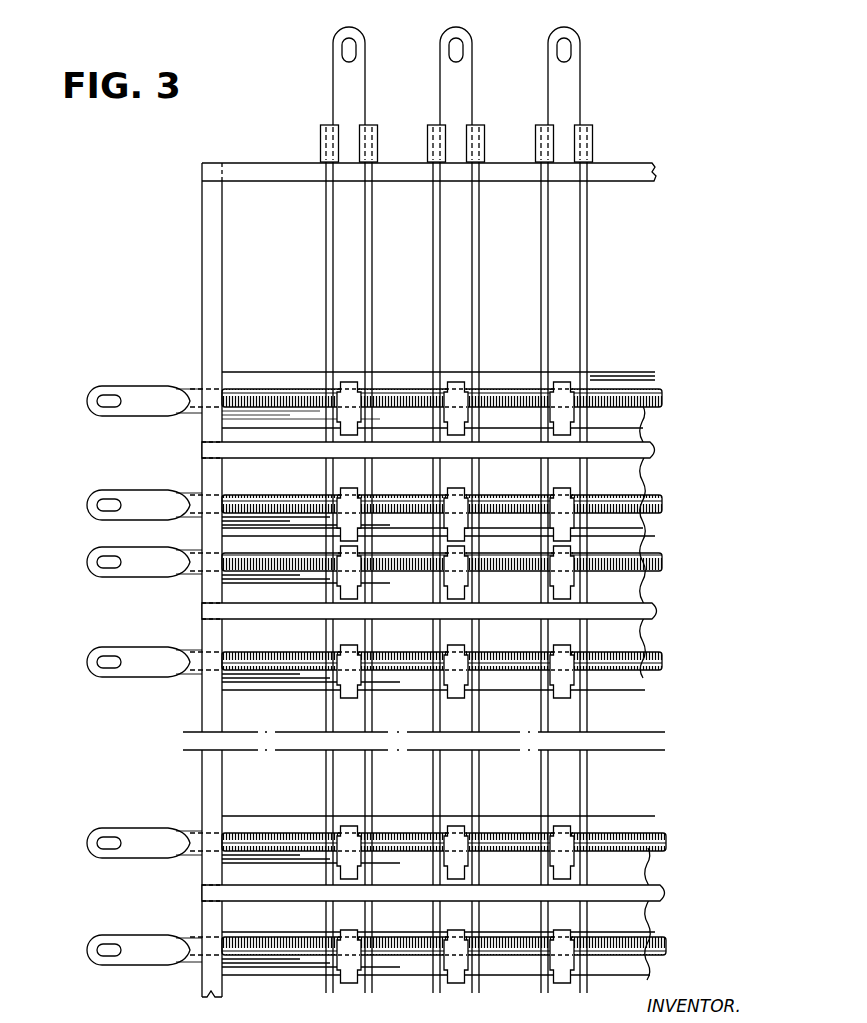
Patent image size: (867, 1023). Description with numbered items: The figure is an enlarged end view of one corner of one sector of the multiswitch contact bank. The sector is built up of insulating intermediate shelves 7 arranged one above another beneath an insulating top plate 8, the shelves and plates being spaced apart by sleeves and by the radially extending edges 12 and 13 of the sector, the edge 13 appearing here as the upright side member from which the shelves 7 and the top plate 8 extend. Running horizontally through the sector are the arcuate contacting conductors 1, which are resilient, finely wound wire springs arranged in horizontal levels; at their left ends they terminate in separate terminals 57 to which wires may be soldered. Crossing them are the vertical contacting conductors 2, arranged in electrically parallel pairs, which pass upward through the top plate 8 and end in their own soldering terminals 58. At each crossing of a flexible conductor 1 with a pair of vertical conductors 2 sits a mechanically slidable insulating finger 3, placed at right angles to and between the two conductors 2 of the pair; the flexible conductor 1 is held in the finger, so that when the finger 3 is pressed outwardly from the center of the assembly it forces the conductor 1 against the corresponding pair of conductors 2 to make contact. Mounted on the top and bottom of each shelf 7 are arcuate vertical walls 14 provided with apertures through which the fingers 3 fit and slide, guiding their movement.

The arcuate contacting conductor 1 is at (282, 390).
The vertical contacting conductor 2 is at (477, 244).
The slidable finger 3 is at (447, 473).
The intermediate shelf 7 is at (640, 448).
The top plate 8 is at (644, 168).
The radially extending edge 12 is at (205, 597).
The radially extending edge 13 is at (212, 233).
The arcuate vertical wall 14 is at (622, 413).
The terminal 57 is at (102, 387).
The terminal 58 is at (443, 38).